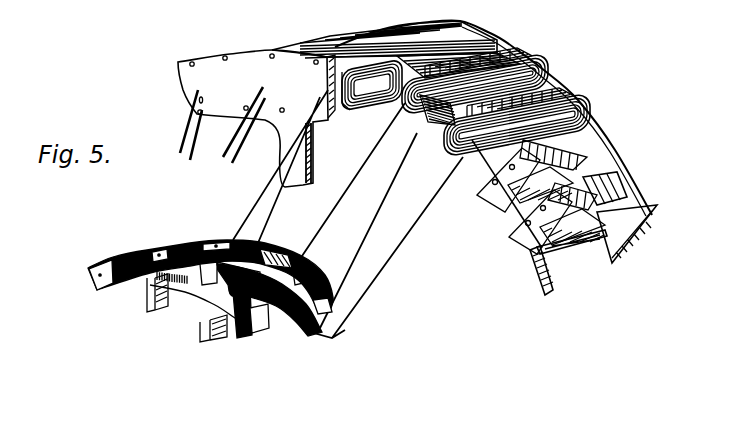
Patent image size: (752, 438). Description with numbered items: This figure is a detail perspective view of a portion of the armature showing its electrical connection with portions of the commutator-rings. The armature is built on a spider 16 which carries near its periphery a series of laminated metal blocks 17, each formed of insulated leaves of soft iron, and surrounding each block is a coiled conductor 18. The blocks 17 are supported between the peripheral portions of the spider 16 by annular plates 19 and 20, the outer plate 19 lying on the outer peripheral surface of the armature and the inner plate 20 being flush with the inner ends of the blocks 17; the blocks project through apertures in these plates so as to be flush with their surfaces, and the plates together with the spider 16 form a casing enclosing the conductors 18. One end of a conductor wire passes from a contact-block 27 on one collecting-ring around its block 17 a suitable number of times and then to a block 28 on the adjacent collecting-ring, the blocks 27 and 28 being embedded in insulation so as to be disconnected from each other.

The spider 16 is at (280, 152).
The laminated metal block 17 is at (525, 62).
The coiled conductor 18 is at (366, 99).
The outer annular plate 19 is at (637, 205).
The inner annular plate 20 is at (538, 242).
The contact-block 27 is at (208, 291).
The contact-block 28 is at (330, 298).